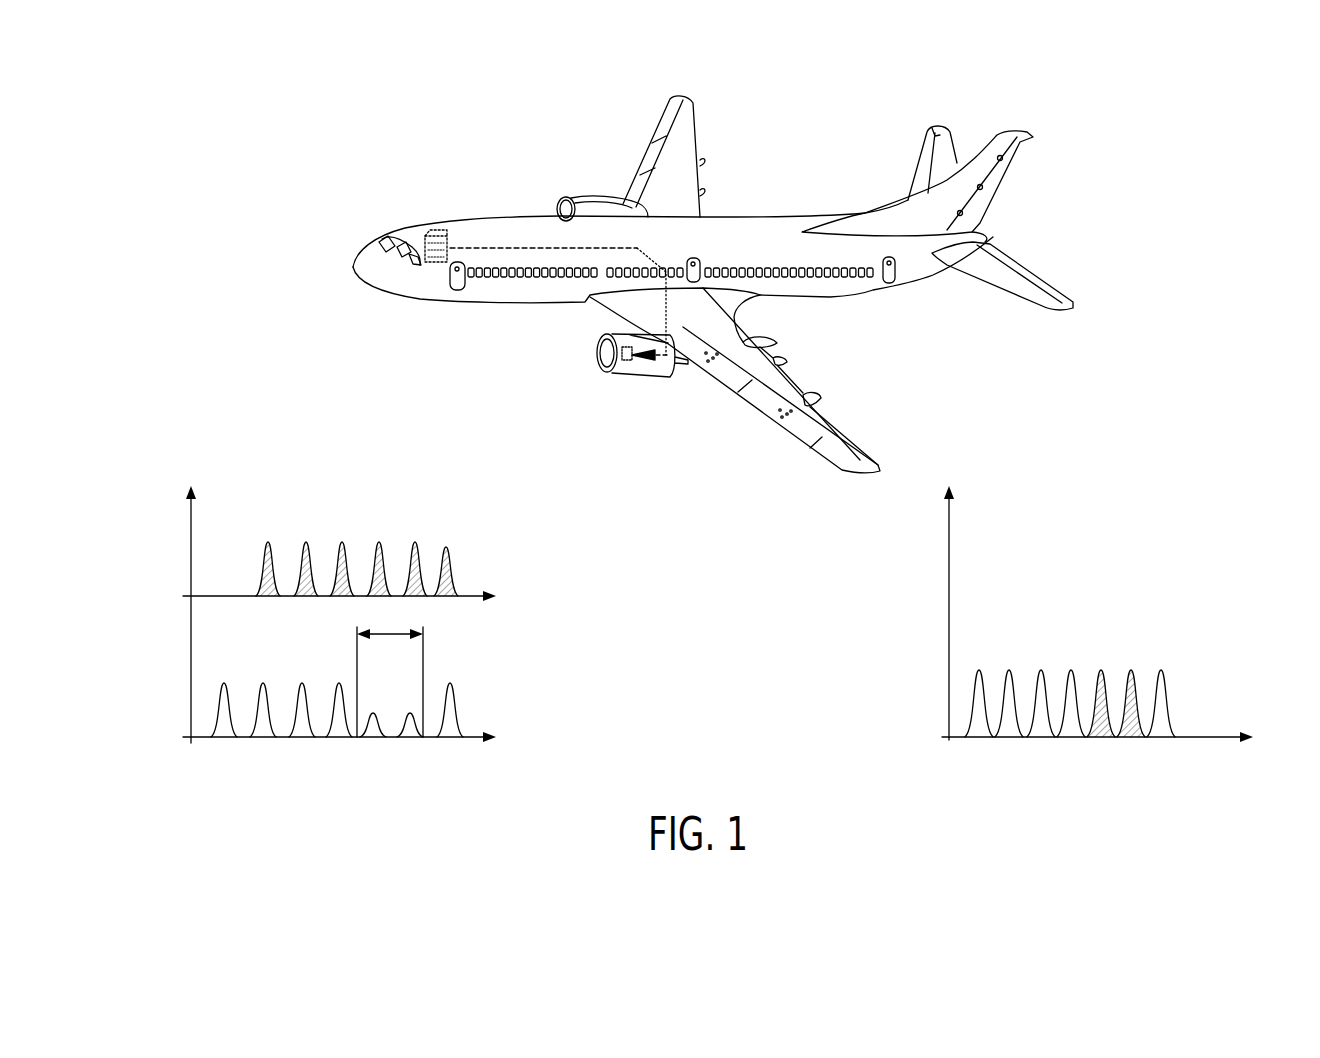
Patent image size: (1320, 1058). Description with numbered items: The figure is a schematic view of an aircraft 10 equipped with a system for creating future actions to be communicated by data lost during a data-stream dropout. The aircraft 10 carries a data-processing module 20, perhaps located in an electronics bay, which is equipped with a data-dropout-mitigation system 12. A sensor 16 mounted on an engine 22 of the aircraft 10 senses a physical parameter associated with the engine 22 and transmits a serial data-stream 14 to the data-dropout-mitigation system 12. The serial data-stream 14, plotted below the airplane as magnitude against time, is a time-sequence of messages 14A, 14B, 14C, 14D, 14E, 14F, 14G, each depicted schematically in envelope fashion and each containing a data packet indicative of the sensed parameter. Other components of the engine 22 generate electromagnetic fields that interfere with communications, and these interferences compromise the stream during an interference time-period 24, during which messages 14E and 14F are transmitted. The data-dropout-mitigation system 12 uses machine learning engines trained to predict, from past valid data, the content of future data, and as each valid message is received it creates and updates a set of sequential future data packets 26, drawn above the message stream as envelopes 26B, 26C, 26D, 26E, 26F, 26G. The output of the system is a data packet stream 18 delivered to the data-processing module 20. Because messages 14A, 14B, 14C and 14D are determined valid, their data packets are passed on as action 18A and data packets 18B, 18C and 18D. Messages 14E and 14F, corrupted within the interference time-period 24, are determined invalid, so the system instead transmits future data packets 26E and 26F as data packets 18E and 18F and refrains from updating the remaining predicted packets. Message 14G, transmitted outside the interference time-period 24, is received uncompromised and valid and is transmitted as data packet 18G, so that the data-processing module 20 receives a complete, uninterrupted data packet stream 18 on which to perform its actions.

The aircraft 10 is at (418, 226).
The data-dropout-mitigation system 12 is at (443, 248).
The serial data-stream 14 is at (501, 664).
The message 14A is at (224, 684).
The message 14B is at (264, 686).
The message 14C is at (302, 690).
The message 14D is at (339, 686).
The message 14E is at (373, 716).
The message 14F is at (413, 714).
The message 14G is at (451, 686).
The sensor 16 is at (628, 362).
The data packet stream 18 is at (1187, 556).
The action 18A is at (979, 672).
The data packet 18B is at (1009, 670).
The data packet 18C is at (1041, 670).
The data packet 18D is at (1071, 670).
The data packet 18E is at (1101, 670).
The data packet 18F is at (1131, 670).
The data packet 18G is at (1161, 670).
The data-processing module 20 is at (441, 232).
The engine 22 is at (567, 216).
The interference time-period 24 is at (390, 669).
The sequential future data packets 26 is at (464, 520).
The future data packet 26B is at (268, 540).
The future data packet 26C is at (306, 540).
The future data packet 26D is at (342, 540).
The future data packet 26E is at (379, 540).
The future data packet 26F is at (415, 540).
The future data packet 26G is at (452, 558).